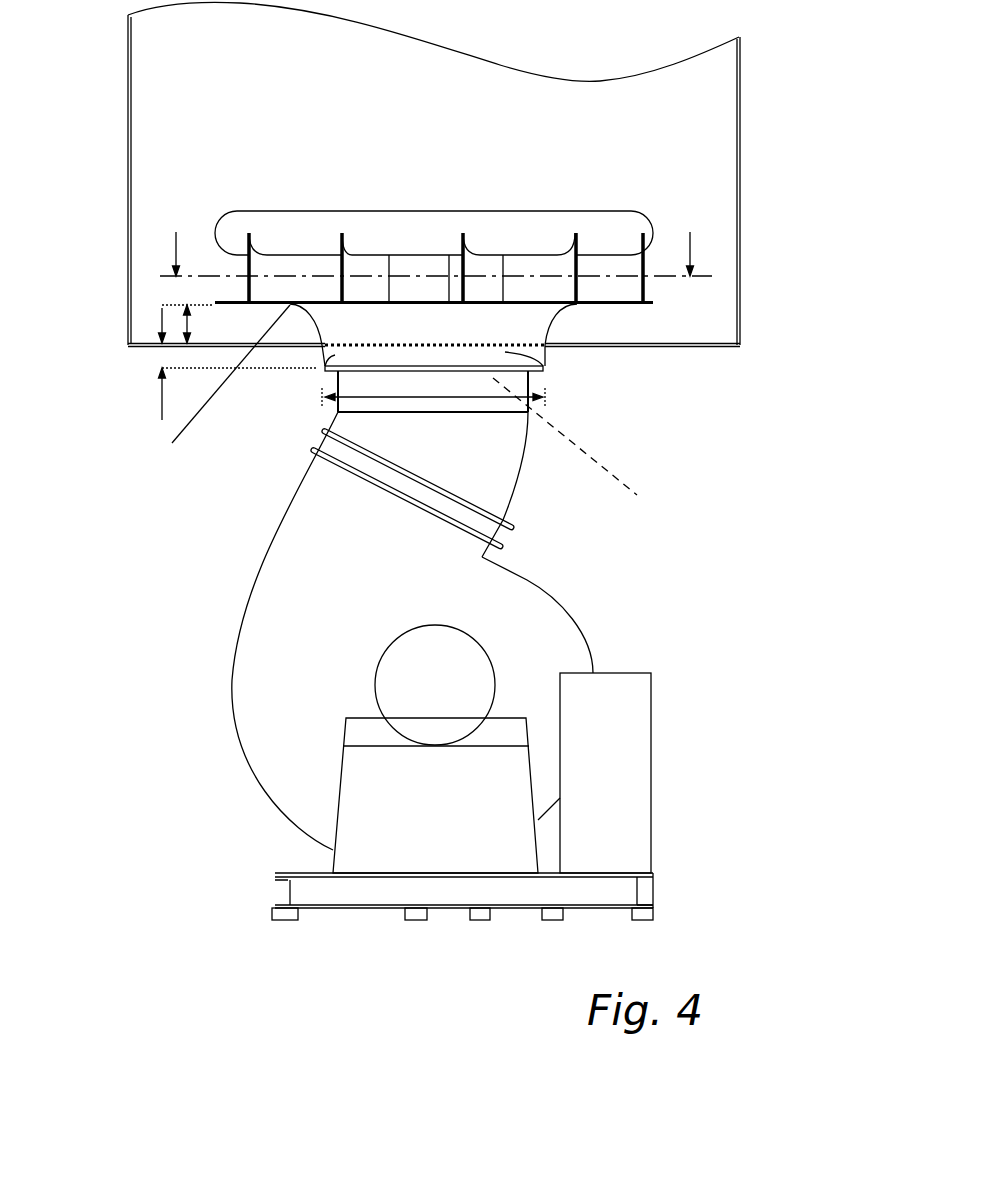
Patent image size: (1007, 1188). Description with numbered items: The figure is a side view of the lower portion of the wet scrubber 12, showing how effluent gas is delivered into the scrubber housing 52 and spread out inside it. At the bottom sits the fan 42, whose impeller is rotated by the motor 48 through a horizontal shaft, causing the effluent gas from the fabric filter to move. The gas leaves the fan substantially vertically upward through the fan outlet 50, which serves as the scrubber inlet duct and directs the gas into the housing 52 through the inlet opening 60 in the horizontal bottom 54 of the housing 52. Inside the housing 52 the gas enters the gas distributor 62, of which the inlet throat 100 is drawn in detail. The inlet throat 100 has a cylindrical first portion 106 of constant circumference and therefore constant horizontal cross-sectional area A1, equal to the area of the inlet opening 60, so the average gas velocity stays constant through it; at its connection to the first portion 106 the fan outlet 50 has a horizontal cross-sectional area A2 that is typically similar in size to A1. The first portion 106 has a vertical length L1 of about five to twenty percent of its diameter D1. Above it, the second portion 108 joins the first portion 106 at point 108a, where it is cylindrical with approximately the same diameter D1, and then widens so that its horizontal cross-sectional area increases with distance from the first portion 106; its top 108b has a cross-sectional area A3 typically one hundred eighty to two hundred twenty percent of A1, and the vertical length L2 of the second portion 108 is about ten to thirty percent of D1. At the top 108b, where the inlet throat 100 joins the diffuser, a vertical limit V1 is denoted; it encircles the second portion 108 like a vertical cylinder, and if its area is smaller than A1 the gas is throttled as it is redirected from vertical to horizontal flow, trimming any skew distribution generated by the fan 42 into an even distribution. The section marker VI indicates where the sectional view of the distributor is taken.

The wet scrubber 12 is at (102, 400).
The fan 42 is at (221, 665).
The motor 48 is at (417, 662).
The fan outlet 50 is at (513, 452).
The housing 52 is at (128, 132).
The horizontal bottom 54 is at (713, 347).
The inlet opening 60 is at (575, 452).
The gas distributor 62 is at (621, 169).
The inlet throat 100 is at (552, 355).
The first portion 106 is at (323, 355).
The second portion 108 is at (306, 322).
The point where second portion connects to first portion 108a is at (316, 338).
The top of second portion 108b is at (213, 390).
The horizontal cross-sectional area of first portion A1 is at (547, 367).
The horizontal cross-sectional area of fan outlet A2 is at (463, 380).
The horizontal cross-sectional area of top of second portion A3 is at (530, 305).
The diameter of first portion D1 is at (433, 390).
The vertical length of first portion L1 is at (222, 394).
The vertical length of second portion L2 is at (191, 324).
The vertical limit V1 is at (302, 268).
The section line VI is at (431, 254).